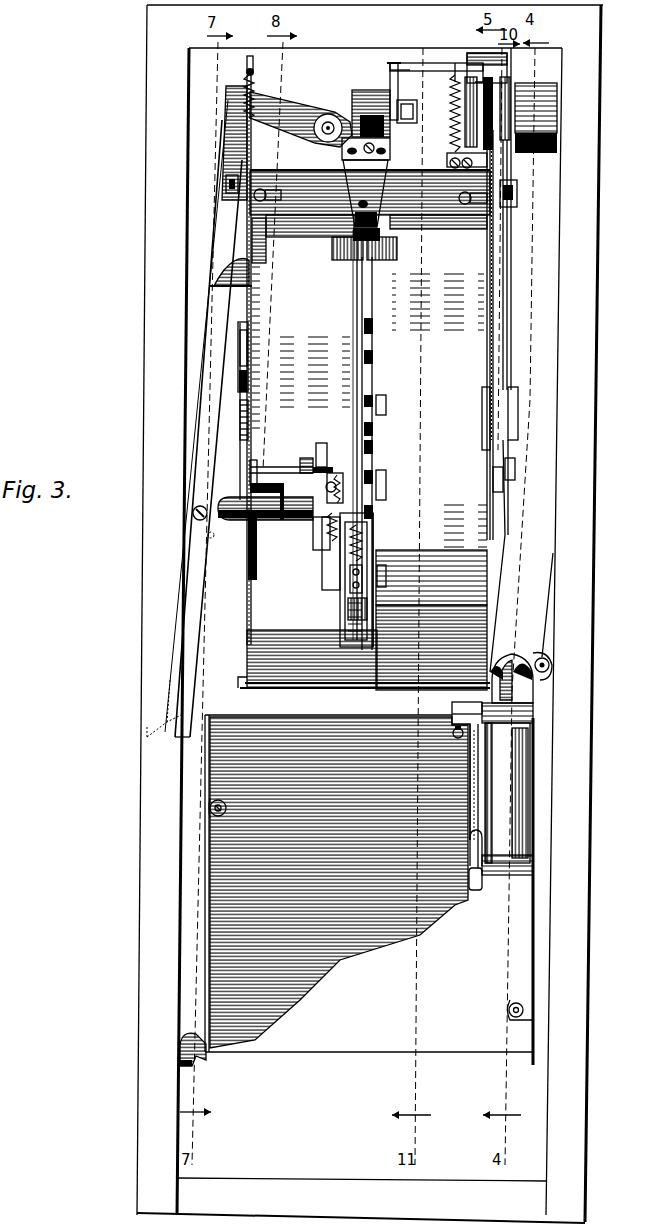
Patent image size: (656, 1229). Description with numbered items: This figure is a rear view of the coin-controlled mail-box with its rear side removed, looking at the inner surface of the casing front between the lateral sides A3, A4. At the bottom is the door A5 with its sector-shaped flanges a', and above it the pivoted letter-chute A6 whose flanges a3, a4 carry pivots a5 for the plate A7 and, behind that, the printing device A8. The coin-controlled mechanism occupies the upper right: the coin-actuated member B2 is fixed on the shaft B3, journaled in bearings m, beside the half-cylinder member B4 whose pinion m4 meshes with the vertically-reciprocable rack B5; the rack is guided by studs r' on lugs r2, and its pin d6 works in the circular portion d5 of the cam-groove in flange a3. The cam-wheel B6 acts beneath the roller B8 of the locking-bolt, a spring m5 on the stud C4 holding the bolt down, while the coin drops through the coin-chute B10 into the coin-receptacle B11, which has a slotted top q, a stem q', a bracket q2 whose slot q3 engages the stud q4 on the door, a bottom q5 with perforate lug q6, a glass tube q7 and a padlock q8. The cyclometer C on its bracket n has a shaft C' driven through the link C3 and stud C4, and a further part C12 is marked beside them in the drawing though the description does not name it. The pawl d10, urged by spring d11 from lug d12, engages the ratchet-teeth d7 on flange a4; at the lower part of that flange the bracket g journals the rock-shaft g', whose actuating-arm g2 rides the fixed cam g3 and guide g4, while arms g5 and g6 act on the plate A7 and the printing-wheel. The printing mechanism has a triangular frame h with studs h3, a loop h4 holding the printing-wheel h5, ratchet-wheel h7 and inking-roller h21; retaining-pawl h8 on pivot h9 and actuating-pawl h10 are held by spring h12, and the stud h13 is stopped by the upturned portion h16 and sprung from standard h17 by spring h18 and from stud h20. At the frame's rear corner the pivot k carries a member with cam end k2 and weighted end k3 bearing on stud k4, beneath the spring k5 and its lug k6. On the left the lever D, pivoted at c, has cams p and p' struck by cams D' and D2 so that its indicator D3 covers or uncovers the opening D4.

The lateral side A3 is at (592, 293).
The lateral side A4 is at (160, 297).
The door A5 is at (369, 883).
The letter-chute and closure A6 is at (398, 410).
The plate or member A7 is at (392, 497).
The printing or numbering device A8 is at (366, 382).
The rotatable coin-actuated member B2 is at (480, 141).
The shaft B3 is at (463, 82).
The combination pinion and coin-actuating member B4 is at (536, 108).
The vertically-reciprocable rack B5 is at (507, 260).
The cam-wheel B6 is at (492, 160).
The roller B8 is at (503, 78).
The coin-chute B10 is at (521, 364).
The coin-receptacle B11 is at (517, 784).
The cyclometer or counting device C is at (356, 110).
The shaft of the cyclometer C' is at (377, 88).
The link C3 is at (391, 66).
The stud C4 is at (414, 62).
The block C12 is at (408, 124).
The lever D is at (173, 418).
The cam D' is at (175, 1041).
The cam D2 is at (252, 272).
The lateral projection D3 is at (324, 114).
The opening D4 is at (289, 104).
The sector-shaped flanges a' is at (369, 890).
The sector-shaped flange a3 is at (488, 322).
The sector-shaped flange a4 is at (253, 316).
The pivots a5 is at (273, 201).
The pivot c is at (193, 513).
The circular portion of cam-groove d5 is at (482, 448).
The pin d6 is at (500, 437).
The ratchet-teeth d7 is at (246, 238).
The pawl d10 is at (240, 138).
The spring d11 is at (243, 100).
The lug d12 is at (246, 64).
The bracket g is at (267, 482).
The rock-shaft g' is at (181, 553).
The actuating-arm g2 is at (250, 438).
The fixed cam g3 is at (247, 358).
The guide and stop member g4 is at (237, 392).
The arm g5 is at (310, 553).
The arm g6 is at (347, 578).
The triangular frame member h is at (364, 304).
The studs h3 is at (376, 430).
The loop h4 is at (374, 612).
The printing-wheel h5 is at (345, 586).
The ratchet-wheel h7 is at (396, 577).
The retaining-pawl h8 is at (376, 478).
The pivot h9 is at (376, 404).
The actuating-pawl h10 is at (376, 510).
The spring h12 is at (378, 450).
The stud h13 is at (372, 434).
The upturned portion h16 is at (321, 450).
The standard h17 is at (300, 447).
The spring h18 is at (318, 482).
The stud h20 is at (322, 537).
The inking-roller h21 is at (349, 614).
The pivot k is at (372, 300).
The cam-shaped upper end k2 is at (372, 262).
The weighted lower end k3 is at (375, 360).
The stud k4 is at (375, 328).
The spring k5 is at (365, 193).
The depending lug k6 is at (378, 224).
The box l' is at (375, 580).
The bearings m is at (536, 143).
The pinion m4 is at (509, 98).
The spring m5 is at (439, 113).
The bracket n is at (342, 148).
The cam p is at (142, 718).
The cam p' is at (213, 184).
The top q is at (525, 695).
The depending stem q' is at (458, 785).
The bracket q2 is at (451, 712).
The slot q3 is at (464, 752).
The stud q4 is at (453, 733).
The bottom q5 is at (528, 861).
The perforate lug q6 is at (469, 835).
The glass tube q7 is at (523, 810).
The padlock q8 is at (469, 885).
The studs r' is at (523, 331).
The lugs r2 is at (500, 206).